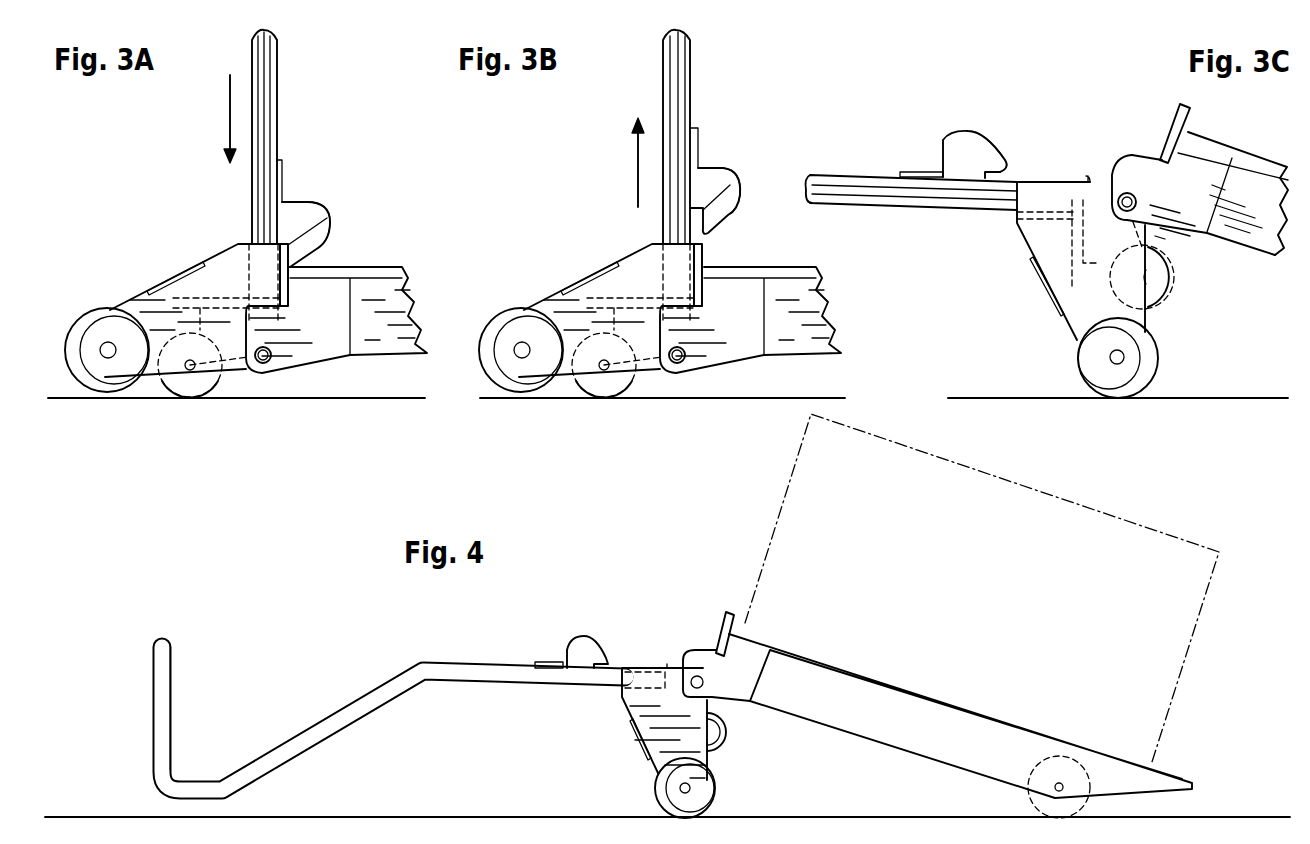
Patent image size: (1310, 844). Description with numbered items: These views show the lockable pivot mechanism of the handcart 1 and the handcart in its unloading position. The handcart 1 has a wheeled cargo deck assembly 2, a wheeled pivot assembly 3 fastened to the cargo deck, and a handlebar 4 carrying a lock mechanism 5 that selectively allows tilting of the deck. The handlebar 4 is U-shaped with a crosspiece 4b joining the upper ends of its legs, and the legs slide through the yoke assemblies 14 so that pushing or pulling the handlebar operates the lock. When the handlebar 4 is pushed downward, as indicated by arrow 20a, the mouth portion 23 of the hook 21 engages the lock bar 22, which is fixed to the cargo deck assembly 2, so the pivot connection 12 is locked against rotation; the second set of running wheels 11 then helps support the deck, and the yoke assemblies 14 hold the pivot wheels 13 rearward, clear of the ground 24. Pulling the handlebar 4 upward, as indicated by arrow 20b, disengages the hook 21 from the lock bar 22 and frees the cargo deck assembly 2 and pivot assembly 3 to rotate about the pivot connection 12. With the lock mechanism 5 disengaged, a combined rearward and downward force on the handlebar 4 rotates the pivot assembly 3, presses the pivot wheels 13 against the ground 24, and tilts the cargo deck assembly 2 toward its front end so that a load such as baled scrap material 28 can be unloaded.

In FIG. 4, the handcart 1 is at (305, 582).
In FIG. 3A, the cargo deck assembly 2 is at (420, 275).
In FIG. 3B, the cargo deck assembly 2 is at (823, 272).
In FIG. 3C, the cargo deck assembly 2 is at (1243, 140).
In FIG. 4, the cargo deck assembly 2 is at (1178, 764).
In FIG. 3A, the pivot assembly 3 is at (100, 270).
In FIG. 3B, the pivot assembly 3 is at (530, 267).
In FIG. 3C, the pivot assembly 3 is at (1040, 315).
In FIG. 4, the pivot assembly 3 is at (600, 749).
In FIG. 3A, the handlebar 4 is at (275, 110).
In FIG. 3B, the handlebar 4 is at (670, 100).
In FIG. 3C, the handlebar 4 is at (850, 187).
In FIG. 4, the handlebar 4 is at (412, 657).
In FIG. 4, the crosspiece 4b is at (152, 688).
In FIG. 4, the lock mechanism 5 is at (613, 625).
In FIG. 3A, the second set of running wheels 11 is at (195, 392).
In FIG. 3B, the second set of running wheels 11 is at (603, 393).
In FIG. 3C, the second set of running wheels 11 is at (1168, 285).
In FIG. 4, the second set of running wheels 11 is at (716, 732).
In FIG. 3A, the pivot connection 12 is at (268, 360).
In FIG. 3B, the pivot connection 12 is at (680, 362).
In FIG. 3C, the pivot connection 12 is at (1120, 197).
In FIG. 4, the pivot connection 12 is at (697, 682).
In FIG. 3A, the pivot wheels 13 is at (92, 313).
In FIG. 3B, the pivot wheels 13 is at (490, 330).
In FIG. 3C, the pivot wheels 13 is at (1077, 372).
In FIG. 4, the pivot wheels 13 is at (685, 788).
In FIG. 3A, the yoke assemblies 14 is at (220, 258).
In FIG. 3B, the yoke assemblies 14 is at (637, 258).
In FIG. 3C, the yoke assemblies 14 is at (1027, 230).
In FIG. 4, the yoke assemblies 14 is at (640, 739).
In FIG. 3A, the arrow indicating downward handlebar movement 20a is at (228, 124).
In FIG. 3B, the arrow indicating upward handlebar movement 20b is at (637, 170).
In FIG. 3A, the hook 21 is at (330, 225).
In FIG. 3B, the hook 21 is at (708, 167).
In FIG. 3C, the hook 21 is at (958, 142).
In FIG. 4, the hook 21 is at (565, 652).
In FIG. 3A, the lock bar 22 is at (285, 288).
In FIG. 3B, the lock bar 22 is at (707, 253).
In FIG. 3C, the lock bar 22 is at (1180, 110).
In FIG. 4, the lock bar 22 is at (718, 626).
In FIG. 3A, the mouth portion 23 is at (315, 232).
In FIG. 3B, the mouth portion 23 is at (712, 175).
In FIG. 3C, the mouth portion 23 is at (1003, 177).
In FIG. 3A, the ground 24 is at (370, 397).
In FIG. 3B, the ground 24 is at (780, 398).
In FIG. 3C, the ground 24 is at (1003, 397).
In FIG. 4, the ground 24 is at (377, 817).
In FIG. 4, the baled scrap material 28 is at (1120, 520).